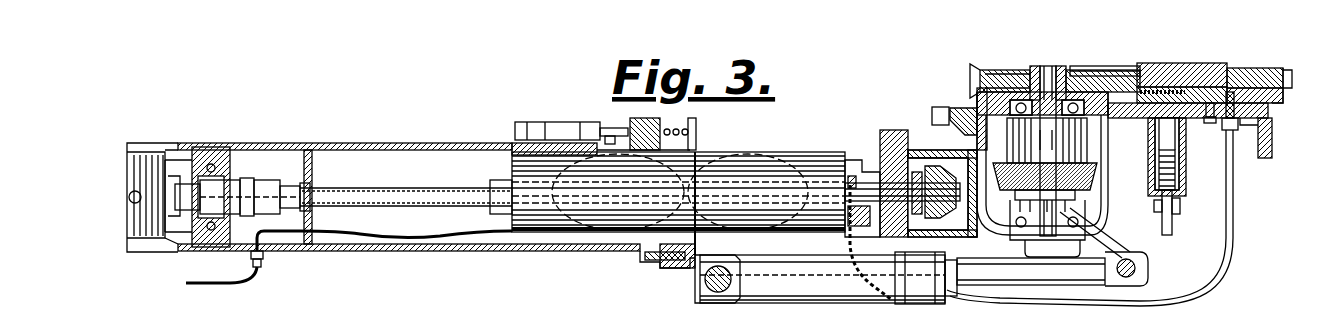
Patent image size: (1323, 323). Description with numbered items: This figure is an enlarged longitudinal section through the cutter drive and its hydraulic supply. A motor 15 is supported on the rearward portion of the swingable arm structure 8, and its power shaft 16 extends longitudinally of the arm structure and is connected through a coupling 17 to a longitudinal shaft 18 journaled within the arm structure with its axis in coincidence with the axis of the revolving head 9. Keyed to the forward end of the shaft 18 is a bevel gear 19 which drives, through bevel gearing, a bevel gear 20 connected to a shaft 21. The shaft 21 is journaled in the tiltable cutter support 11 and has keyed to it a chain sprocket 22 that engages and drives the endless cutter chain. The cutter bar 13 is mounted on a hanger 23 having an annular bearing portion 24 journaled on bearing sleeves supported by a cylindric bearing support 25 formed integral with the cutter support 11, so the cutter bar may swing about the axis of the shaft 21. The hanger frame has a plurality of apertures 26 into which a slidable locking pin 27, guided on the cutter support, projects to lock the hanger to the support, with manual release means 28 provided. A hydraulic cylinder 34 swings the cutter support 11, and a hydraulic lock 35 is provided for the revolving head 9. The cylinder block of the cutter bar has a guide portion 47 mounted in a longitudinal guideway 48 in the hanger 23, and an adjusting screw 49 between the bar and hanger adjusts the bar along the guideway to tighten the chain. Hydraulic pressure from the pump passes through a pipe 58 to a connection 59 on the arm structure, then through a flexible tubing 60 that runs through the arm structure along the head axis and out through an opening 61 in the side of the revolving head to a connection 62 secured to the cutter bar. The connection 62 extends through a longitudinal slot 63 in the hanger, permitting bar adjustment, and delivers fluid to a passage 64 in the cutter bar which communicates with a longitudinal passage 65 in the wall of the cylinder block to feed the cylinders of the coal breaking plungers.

The swingable arm structure 8 is at (356, 144).
The revolving head 9 is at (740, 158).
The cutter support 11 is at (1108, 198).
The cutter bar 13 is at (1253, 64).
The motor 15 is at (155, 246).
The power shaft 16 is at (168, 158).
The coupling 17 is at (253, 192).
The longitudinal shaft 18 is at (848, 170).
The bevel gear 19 is at (950, 226).
The bevel gear 20 is at (1088, 188).
The shaft 21 is at (1047, 66).
The chain sprocket 22 is at (1016, 70).
The hanger 23 is at (1184, 63).
The annular bearing portion 24 is at (975, 118).
The cylindric bearing support 25 is at (955, 102).
The apertures 26 is at (1165, 124).
The locking pin 27 is at (1160, 150).
The manual release means 28 is at (1180, 209).
The hydraulic cylinder 34 is at (802, 296).
The hydraulic lock 35 is at (536, 124).
The guide portion 47 is at (1278, 108).
The longitudinal guideway 48 is at (1210, 103).
The adjusting screw 49 is at (1086, 66).
The pipe 58 is at (214, 284).
The connection 59 is at (263, 262).
The flexible tubing 60 is at (430, 236).
The opening 61 is at (838, 240).
The connection 62 is at (1226, 130).
The longitudinal slot 63 is at (1228, 148).
The passage 64 is at (1230, 92).
The longitudinal passage 65 is at (1264, 72).